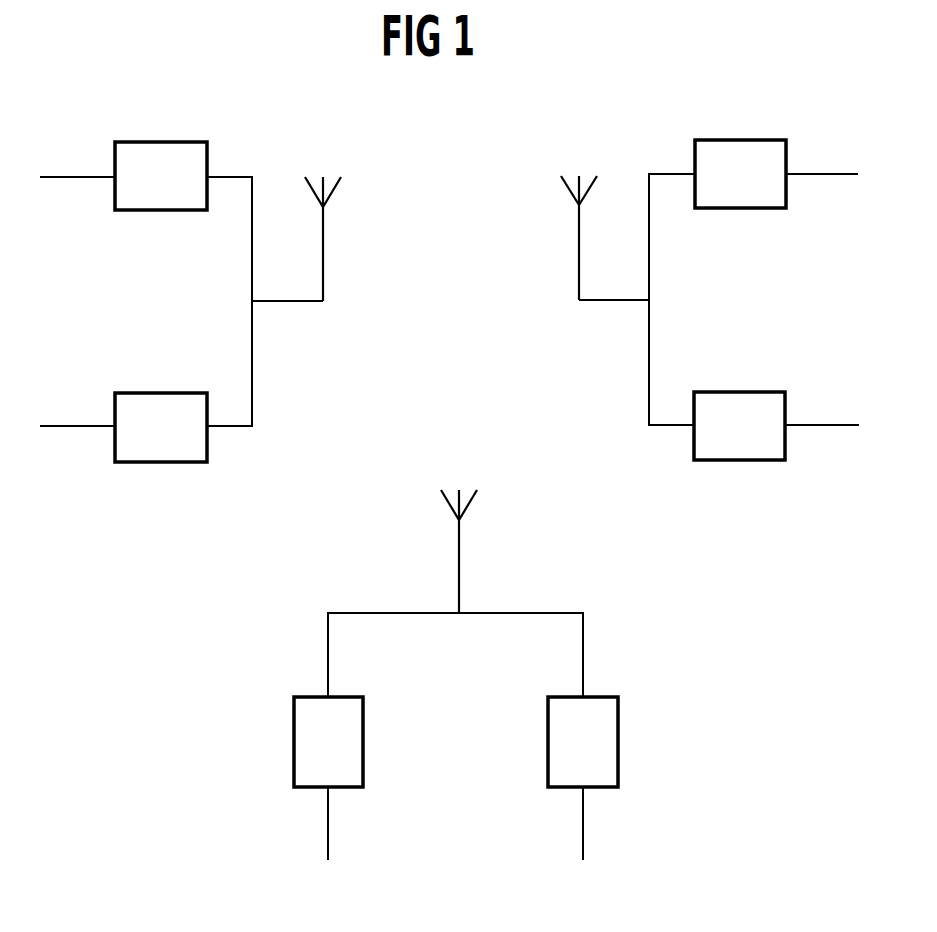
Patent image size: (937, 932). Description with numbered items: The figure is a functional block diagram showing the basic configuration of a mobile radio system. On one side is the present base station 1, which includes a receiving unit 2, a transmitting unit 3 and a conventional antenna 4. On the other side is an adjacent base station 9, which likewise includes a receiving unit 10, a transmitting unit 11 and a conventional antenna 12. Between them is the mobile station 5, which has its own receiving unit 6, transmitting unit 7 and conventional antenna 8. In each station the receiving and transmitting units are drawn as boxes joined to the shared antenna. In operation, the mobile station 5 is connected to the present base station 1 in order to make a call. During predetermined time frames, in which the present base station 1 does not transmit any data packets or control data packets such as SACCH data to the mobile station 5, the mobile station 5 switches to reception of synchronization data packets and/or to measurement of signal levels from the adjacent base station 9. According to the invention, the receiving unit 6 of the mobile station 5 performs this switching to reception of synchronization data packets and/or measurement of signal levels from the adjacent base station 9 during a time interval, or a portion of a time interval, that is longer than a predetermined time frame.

The base station 1 is at (77, 324).
The receiving unit 2 is at (158, 462).
The transmitting unit 3 is at (165, 142).
The antenna 4 is at (334, 190).
The mobile station 5 is at (807, 318).
The receiving unit 6 is at (736, 460).
The transmitting unit 7 is at (741, 140).
The antenna 8 is at (569, 190).
The adjacent base station 9 is at (448, 690).
The receiving unit 10 is at (618, 741).
The transmitting unit 11 is at (294, 740).
The antenna 12 is at (470, 503).